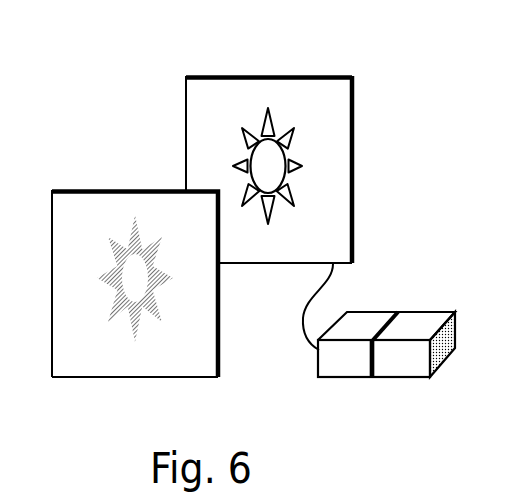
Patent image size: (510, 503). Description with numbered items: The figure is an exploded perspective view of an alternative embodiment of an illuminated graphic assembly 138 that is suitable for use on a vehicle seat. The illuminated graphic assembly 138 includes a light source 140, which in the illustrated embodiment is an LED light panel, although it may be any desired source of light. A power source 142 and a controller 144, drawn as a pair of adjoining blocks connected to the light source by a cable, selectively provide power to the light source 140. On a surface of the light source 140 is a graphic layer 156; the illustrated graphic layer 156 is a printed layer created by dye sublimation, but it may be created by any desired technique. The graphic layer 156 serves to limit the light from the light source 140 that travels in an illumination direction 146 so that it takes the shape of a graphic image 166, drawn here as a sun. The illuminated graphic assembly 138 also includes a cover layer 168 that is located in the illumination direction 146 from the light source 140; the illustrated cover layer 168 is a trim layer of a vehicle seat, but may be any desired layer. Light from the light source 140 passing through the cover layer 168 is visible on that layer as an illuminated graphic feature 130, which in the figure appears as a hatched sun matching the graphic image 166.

The illumination direction 146 is at (118, 72).
The illuminated graphic assembly 138 is at (380, 60).
The illuminated graphic feature 130 is at (130, 243).
The graphic image 166 is at (250, 152).
The graphic layer 156 is at (345, 157).
The light source 140 is at (354, 228).
The cover layer 168 is at (216, 377).
The power source 142 is at (421, 368).
The controller 144 is at (366, 368).